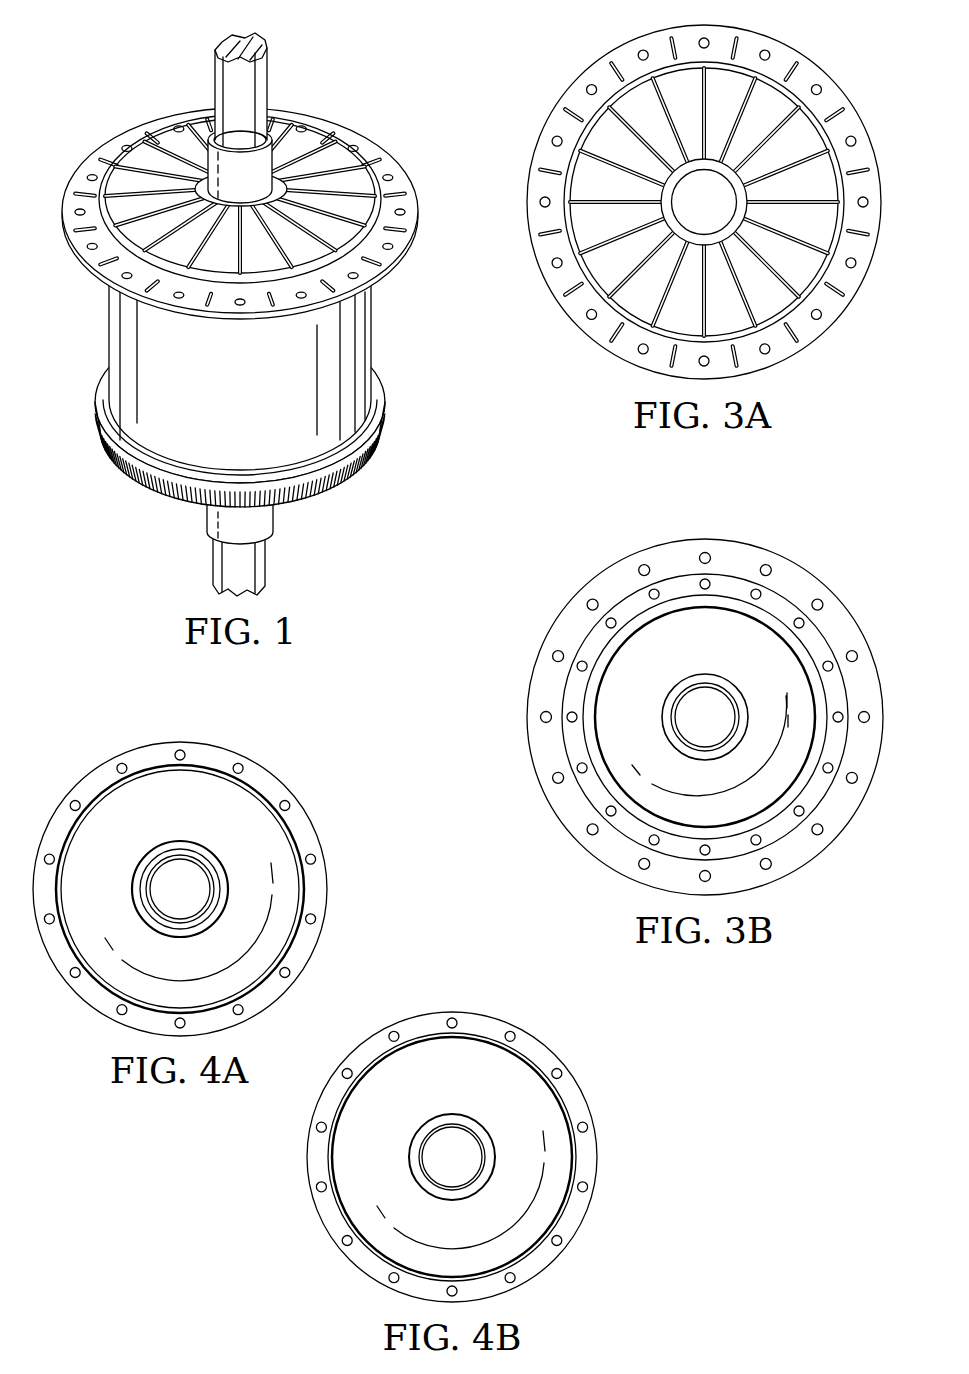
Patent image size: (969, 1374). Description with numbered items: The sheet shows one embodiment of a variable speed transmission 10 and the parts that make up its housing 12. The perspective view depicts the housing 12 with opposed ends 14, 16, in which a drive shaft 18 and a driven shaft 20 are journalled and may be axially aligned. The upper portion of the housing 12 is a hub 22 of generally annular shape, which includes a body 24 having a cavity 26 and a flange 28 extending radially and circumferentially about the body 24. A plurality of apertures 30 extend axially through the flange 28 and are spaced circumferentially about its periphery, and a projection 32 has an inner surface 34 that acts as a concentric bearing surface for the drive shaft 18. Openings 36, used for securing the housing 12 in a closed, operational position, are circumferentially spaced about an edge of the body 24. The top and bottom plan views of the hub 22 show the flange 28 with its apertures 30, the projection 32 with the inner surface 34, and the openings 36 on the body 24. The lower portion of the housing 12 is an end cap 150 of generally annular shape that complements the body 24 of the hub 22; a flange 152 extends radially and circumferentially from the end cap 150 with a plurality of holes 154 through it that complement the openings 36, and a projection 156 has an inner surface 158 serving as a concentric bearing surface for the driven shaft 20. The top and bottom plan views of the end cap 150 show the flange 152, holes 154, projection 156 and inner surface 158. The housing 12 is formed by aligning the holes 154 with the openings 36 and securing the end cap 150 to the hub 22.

In FIG. 1, the variable speed transmission 10 is at (118, 40).
In FIG. 1, the housing 12 is at (394, 122).
In FIG. 1, the end 14 is at (172, 135).
In FIG. 1, the end 16 is at (310, 506).
In FIG. 1, the drive shaft 18 is at (268, 73).
In FIG. 1, the driven shaft 20 is at (268, 556).
In FIG. 1, the hub 22 is at (100, 138).
In FIG. 3A, the hub 22 is at (600, 47).
In FIG. 3B, the hub 22 is at (600, 562).
In FIG. 1, the body 24 is at (108, 320).
In FIG. 3B, the body 24 is at (728, 597).
In FIG. 3B, the cavity 26 is at (596, 745).
In FIG. 3B, the flange 28 is at (672, 588).
In FIG. 1, the apertures 30 is at (75, 205).
In FIG. 3A, the apertures 30 is at (808, 82).
In FIG. 3B, the apertures 30 is at (816, 600).
In FIG. 1, the projection 32 is at (288, 150).
In FIG. 3A, the projection 32 is at (660, 193).
In FIG. 3B, the projection 32 is at (684, 686).
In FIG. 3A, the inner surface 34 is at (730, 188).
In FIG. 3B, the inner surface 34 is at (714, 705).
In FIG. 3B, the openings 36 is at (600, 793).
In FIG. 1, the end cap 150 is at (96, 474).
In FIG. 4A, the end cap 150 is at (224, 742).
In FIG. 4B, the end cap 150 is at (498, 1011).
In FIG. 1, the flange 152 is at (381, 393).
In FIG. 4A, the flange 152 is at (147, 762).
In FIG. 4B, the flange 152 is at (420, 1030).
In FIG. 4A, the holes 154 is at (283, 805).
In FIG. 4B, the holes 154 is at (555, 1073).
In FIG. 1, the projection 156 is at (207, 520).
In FIG. 4A, the projection 156 is at (143, 860).
In FIG. 4B, the projection 156 is at (420, 1132).
In FIG. 4A, the inner surface 158 is at (200, 878).
In FIG. 4B, the inner surface 158 is at (474, 1146).